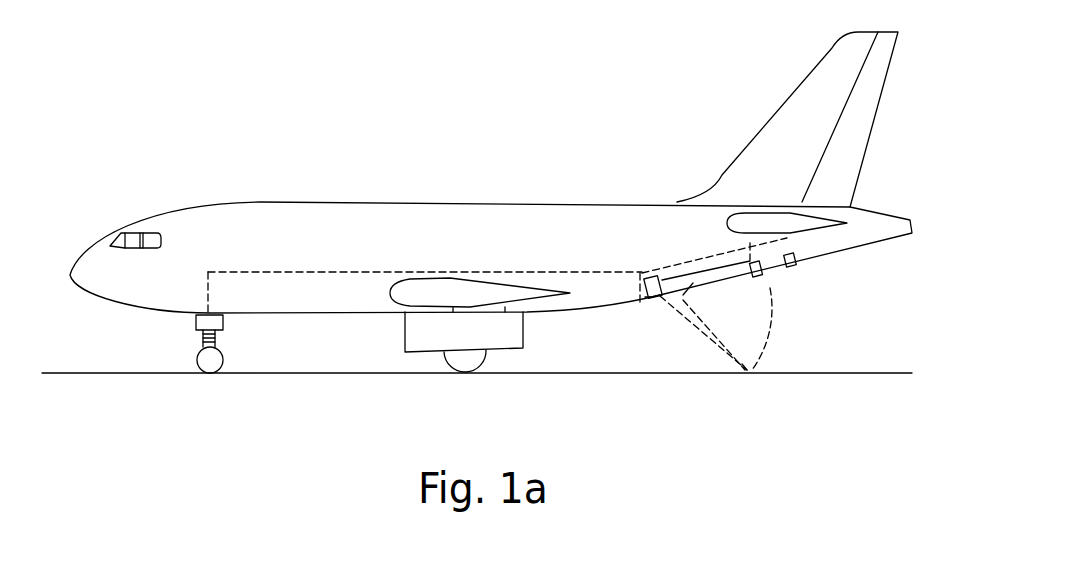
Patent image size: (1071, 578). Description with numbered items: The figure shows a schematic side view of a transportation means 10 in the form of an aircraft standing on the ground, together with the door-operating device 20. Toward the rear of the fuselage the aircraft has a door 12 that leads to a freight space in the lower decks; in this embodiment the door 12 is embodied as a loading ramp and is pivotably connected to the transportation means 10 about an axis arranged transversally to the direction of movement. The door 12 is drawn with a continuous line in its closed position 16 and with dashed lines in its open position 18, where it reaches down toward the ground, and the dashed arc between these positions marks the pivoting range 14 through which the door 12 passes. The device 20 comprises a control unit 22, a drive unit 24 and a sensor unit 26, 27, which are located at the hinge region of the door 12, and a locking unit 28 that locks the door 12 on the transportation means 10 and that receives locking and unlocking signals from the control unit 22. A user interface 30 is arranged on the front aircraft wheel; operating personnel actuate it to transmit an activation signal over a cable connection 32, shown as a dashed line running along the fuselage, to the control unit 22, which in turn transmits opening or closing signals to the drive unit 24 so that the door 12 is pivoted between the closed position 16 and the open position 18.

The transportation means 10 is at (228, 202).
The door 12 is at (676, 306).
The pivoting range 14 is at (773, 317).
The closed position 16 is at (660, 280).
The open position 18 is at (742, 352).
The device 20 is at (876, 317).
The control unit 22 is at (641, 298).
The drive unit 24 is at (657, 298).
The sensor unit 26 is at (800, 263).
The sensor unit 27 is at (763, 280).
The locking unit 28 is at (641, 278).
The user interface 30 is at (215, 336).
The cable connection 32 is at (352, 270).